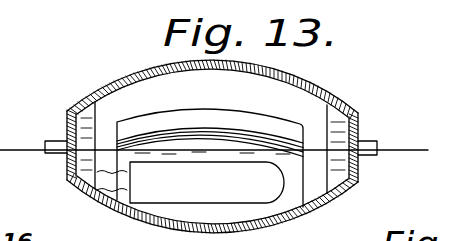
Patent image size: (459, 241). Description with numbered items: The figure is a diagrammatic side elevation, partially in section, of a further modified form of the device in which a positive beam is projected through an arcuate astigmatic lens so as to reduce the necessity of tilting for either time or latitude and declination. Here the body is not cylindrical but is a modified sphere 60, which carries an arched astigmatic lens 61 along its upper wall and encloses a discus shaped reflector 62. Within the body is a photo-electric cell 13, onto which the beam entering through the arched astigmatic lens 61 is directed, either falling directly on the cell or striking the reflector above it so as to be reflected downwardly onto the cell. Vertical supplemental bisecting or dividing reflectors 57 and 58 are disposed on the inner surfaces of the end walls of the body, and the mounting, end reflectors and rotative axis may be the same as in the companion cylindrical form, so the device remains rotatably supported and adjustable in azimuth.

The photo-electric cell 13 is at (207, 182).
The supplemental bisecting reflector 57 is at (68, 130).
The supplemental bisecting reflector 58 is at (356, 136).
The modified sphere 60 is at (327, 201).
The arched astigmatic lens 61 is at (330, 77).
The discus shaped reflector 62 is at (176, 133).